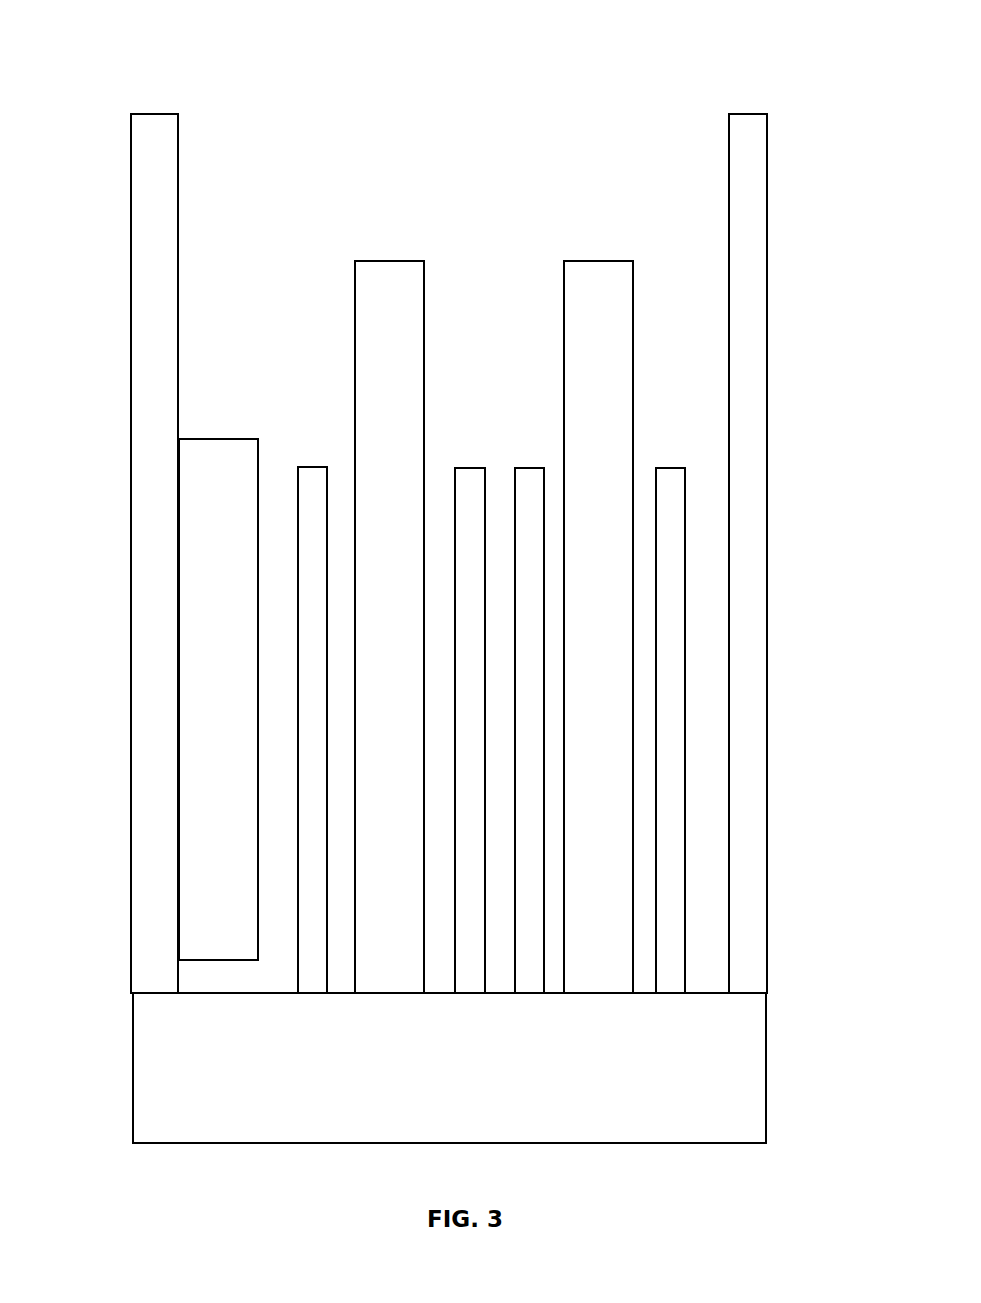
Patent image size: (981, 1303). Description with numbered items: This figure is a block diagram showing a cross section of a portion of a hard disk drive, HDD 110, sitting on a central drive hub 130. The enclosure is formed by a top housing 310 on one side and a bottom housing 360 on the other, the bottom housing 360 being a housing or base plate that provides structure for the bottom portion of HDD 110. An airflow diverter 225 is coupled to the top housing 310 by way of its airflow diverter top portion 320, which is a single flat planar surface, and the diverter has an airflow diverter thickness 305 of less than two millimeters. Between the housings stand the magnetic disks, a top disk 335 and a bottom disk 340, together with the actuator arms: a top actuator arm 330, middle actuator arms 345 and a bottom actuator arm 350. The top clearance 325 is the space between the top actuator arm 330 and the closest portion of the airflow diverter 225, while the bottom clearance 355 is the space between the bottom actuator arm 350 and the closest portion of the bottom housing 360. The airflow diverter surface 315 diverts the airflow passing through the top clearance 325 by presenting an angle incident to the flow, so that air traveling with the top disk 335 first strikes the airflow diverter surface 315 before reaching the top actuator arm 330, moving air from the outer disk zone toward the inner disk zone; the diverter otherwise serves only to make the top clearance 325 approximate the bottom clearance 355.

The HDD 110 is at (107, 87).
The central drive hub 130 is at (770, 1062).
The airflow diverter 225 is at (192, 590).
The airflow diverter thickness 305 is at (218, 699).
The top housing 310 is at (124, 826).
The airflow diverter surface 315 is at (209, 965).
The airflow diverter top portion 320 is at (165, 667).
The top clearance 325 is at (277, 475).
The top actuator arm 330 is at (313, 452).
The top disk 335 is at (390, 246).
The bottom disk 340 is at (602, 246).
The middle actuator arms 345 is at (526, 453).
The bottom actuator arm 350 is at (670, 454).
The bottom clearance 355 is at (708, 472).
The bottom housing 360 is at (774, 304).